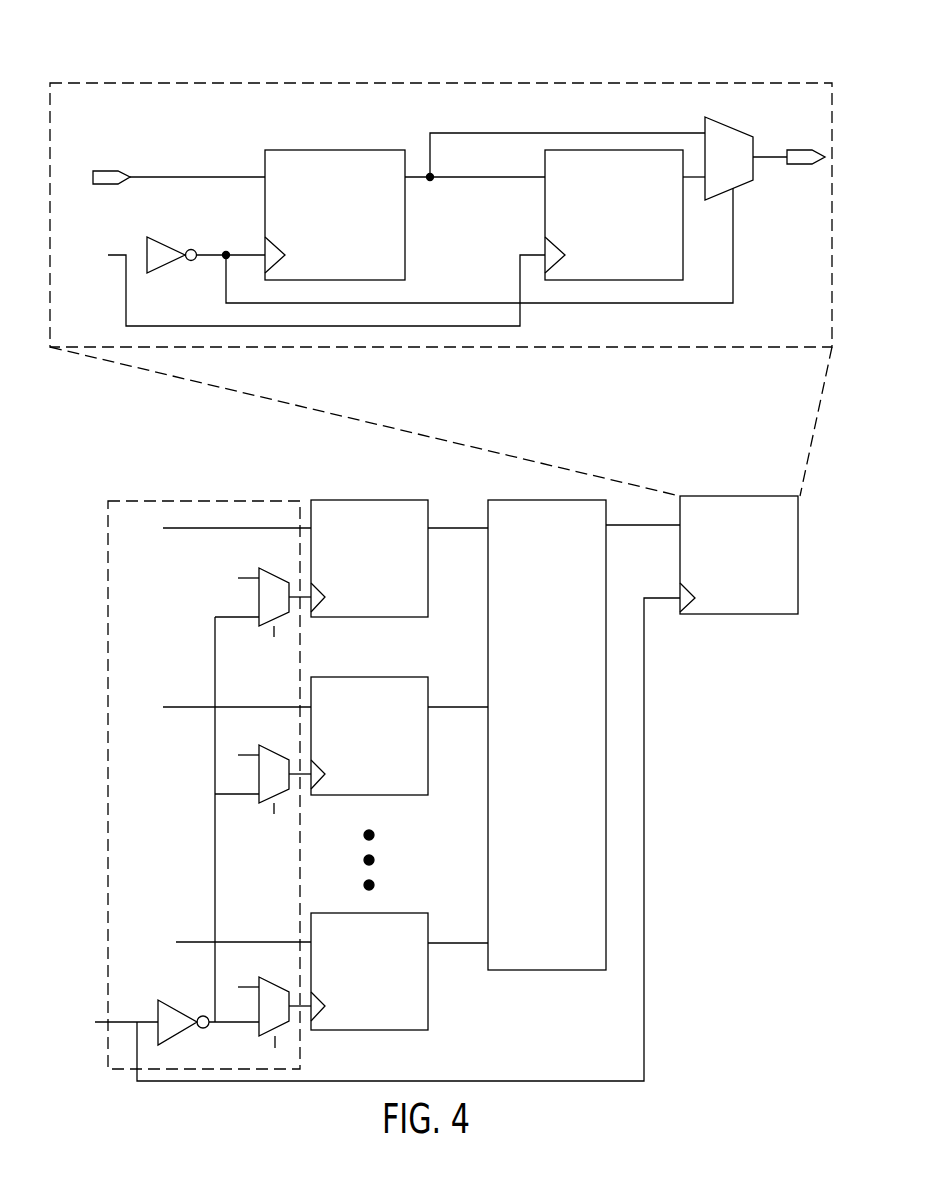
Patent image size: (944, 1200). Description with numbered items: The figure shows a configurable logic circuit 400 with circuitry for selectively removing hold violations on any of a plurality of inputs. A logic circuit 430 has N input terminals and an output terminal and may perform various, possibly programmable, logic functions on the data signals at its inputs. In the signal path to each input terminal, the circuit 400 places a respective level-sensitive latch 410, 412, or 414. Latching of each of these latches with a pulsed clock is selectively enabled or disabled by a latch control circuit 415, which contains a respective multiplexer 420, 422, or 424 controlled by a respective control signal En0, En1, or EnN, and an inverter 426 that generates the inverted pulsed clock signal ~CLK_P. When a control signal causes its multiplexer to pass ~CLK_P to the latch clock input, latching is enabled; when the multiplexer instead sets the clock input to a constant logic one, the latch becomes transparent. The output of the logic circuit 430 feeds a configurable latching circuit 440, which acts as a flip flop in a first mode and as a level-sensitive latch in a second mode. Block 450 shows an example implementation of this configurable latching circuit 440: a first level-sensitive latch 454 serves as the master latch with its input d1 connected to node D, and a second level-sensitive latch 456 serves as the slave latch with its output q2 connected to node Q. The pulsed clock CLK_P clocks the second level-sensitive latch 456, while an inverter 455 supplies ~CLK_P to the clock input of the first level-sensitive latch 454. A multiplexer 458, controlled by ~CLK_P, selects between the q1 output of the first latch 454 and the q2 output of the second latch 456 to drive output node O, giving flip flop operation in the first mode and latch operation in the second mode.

The circuit 400 is at (842, 29).
The level-sensitive latch 410 is at (385, 533).
The level-sensitive latch 412 is at (385, 711).
The level-sensitive latch 414 is at (385, 946).
The latch control circuit 415 is at (198, 501).
The multiplexer 420 is at (291, 604).
The multiplexer 422 is at (291, 781).
The multiplexer 424 is at (291, 1014).
The inverter 426 is at (160, 1000).
The logic circuit 430 is at (563, 615).
The configurable latching circuit 440 is at (752, 534).
The block 450 is at (705, 348).
The first level-sensitive latch 454 is at (350, 213).
The inverter 455 is at (170, 262).
The second level-sensitive latch 456 is at (628, 213).
The multiplexer 458 is at (750, 136).